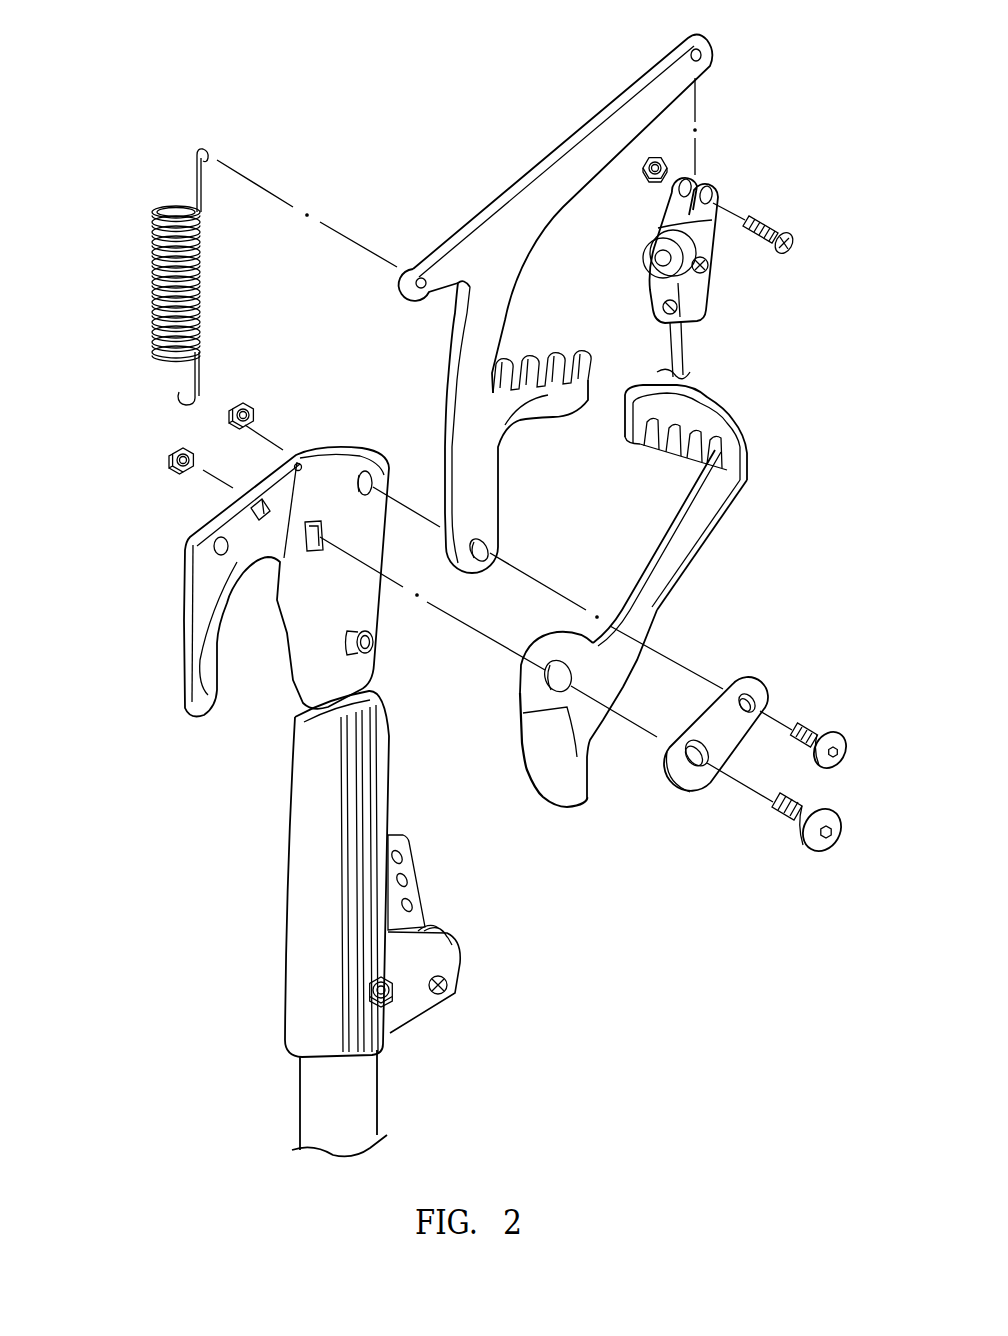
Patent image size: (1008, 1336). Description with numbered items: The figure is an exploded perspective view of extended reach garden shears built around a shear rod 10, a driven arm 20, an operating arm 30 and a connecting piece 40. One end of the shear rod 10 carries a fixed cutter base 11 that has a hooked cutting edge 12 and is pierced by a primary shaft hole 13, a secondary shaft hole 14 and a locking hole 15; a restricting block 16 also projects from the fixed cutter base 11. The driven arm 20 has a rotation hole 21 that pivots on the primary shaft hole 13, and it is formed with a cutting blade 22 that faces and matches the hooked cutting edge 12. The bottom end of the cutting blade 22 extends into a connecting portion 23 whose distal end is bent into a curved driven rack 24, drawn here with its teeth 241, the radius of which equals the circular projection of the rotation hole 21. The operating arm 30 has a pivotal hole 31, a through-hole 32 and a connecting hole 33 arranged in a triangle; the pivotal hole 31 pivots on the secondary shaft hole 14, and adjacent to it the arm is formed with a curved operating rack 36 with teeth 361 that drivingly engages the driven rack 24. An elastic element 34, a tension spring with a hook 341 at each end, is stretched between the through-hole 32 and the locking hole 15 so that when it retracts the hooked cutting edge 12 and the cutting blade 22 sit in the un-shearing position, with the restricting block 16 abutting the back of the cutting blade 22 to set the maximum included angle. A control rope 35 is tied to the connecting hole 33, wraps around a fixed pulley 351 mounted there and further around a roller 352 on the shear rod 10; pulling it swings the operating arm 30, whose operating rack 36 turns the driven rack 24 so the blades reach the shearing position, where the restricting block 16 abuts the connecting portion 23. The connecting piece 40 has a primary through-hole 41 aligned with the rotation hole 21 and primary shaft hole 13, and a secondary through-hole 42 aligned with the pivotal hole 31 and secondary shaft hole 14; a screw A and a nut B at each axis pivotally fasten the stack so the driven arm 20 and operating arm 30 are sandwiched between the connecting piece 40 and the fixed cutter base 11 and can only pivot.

The shear rod 10 is at (278, 1072).
The fixed cutter base 11 is at (313, 633).
The hooked cutting edge 12 is at (217, 643).
The primary shaft hole 13 is at (323, 532).
The secondary shaft hole 14 is at (368, 478).
The locking hole 15 is at (297, 462).
The restricting block 16 is at (374, 646).
The driven arm 20 is at (648, 607).
The rotation hole 21 is at (520, 693).
The cutting blade 22 is at (547, 783).
The connecting portion 23 is at (660, 580).
The driven rack 24 is at (710, 445).
The teeth 241 is at (645, 420).
The operating arm 30 is at (586, 288).
The pivotal hole 31 is at (480, 548).
The through-hole 32 is at (417, 272).
The connecting hole 33 is at (710, 48).
The elastic element 34 is at (153, 275).
The hook 341 is at (197, 150).
The control rope 35 is at (683, 347).
The fixed pulley 351 is at (713, 253).
The roller 352 is at (462, 943).
The operating rack 36 is at (566, 377).
The teeth 361 is at (583, 373).
The connecting piece 40 is at (724, 759).
The primary through-hole 41 is at (697, 762).
The secondary through-hole 42 is at (766, 684).
The screw A is at (815, 728).
The nut B is at (240, 405).